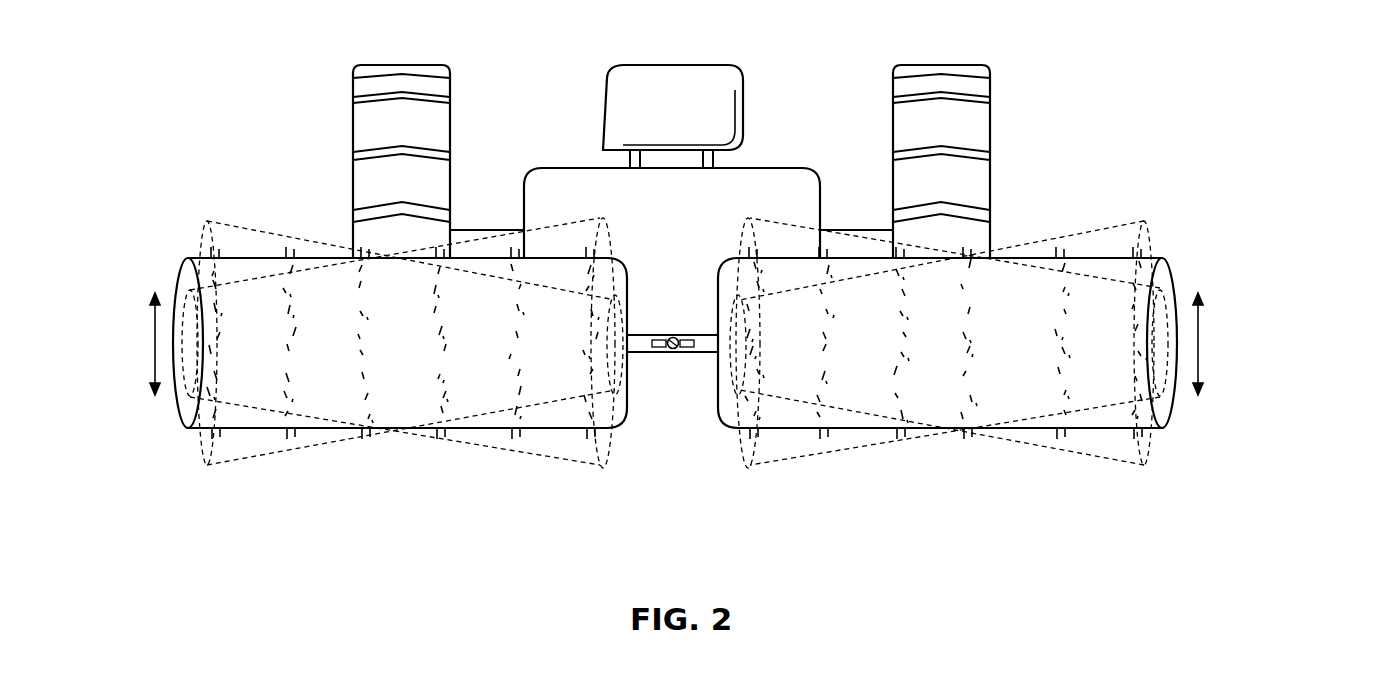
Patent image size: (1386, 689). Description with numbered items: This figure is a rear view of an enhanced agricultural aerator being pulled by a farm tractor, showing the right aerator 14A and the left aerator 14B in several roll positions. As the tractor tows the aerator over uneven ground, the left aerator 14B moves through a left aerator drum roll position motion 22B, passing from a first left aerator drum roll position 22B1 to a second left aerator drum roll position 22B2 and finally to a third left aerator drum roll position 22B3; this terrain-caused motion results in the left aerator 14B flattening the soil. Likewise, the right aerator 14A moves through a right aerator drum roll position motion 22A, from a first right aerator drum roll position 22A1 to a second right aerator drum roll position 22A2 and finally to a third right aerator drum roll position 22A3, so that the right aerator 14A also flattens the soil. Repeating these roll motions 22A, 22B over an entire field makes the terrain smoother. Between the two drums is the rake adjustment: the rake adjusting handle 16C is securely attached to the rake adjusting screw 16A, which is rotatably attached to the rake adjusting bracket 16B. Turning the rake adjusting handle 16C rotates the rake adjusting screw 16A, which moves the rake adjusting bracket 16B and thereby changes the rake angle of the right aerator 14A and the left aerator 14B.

The right aerator 14A is at (1077, 227).
The left aerator 14B is at (258, 228).
The rake adjusting screw 16A is at (703, 352).
The rake adjusting bracket 16B is at (660, 352).
The rake adjusting handle 16C is at (676, 339).
The right aerator drum roll position motion 22A is at (1205, 343).
The right aerator drum roll position 1 22A1 is at (1147, 220).
The right aerator drum roll position 2 22A2 is at (1175, 288).
The right aerator drum roll position 3 22A3 is at (1152, 455).
The left aerator drum roll position motion 22B is at (153, 345).
The left aerator drum roll position 1 22B1 is at (198, 232).
The left aerator drum roll position 2 22B2 is at (175, 290).
The left aerator drum roll position 3 22B3 is at (200, 460).